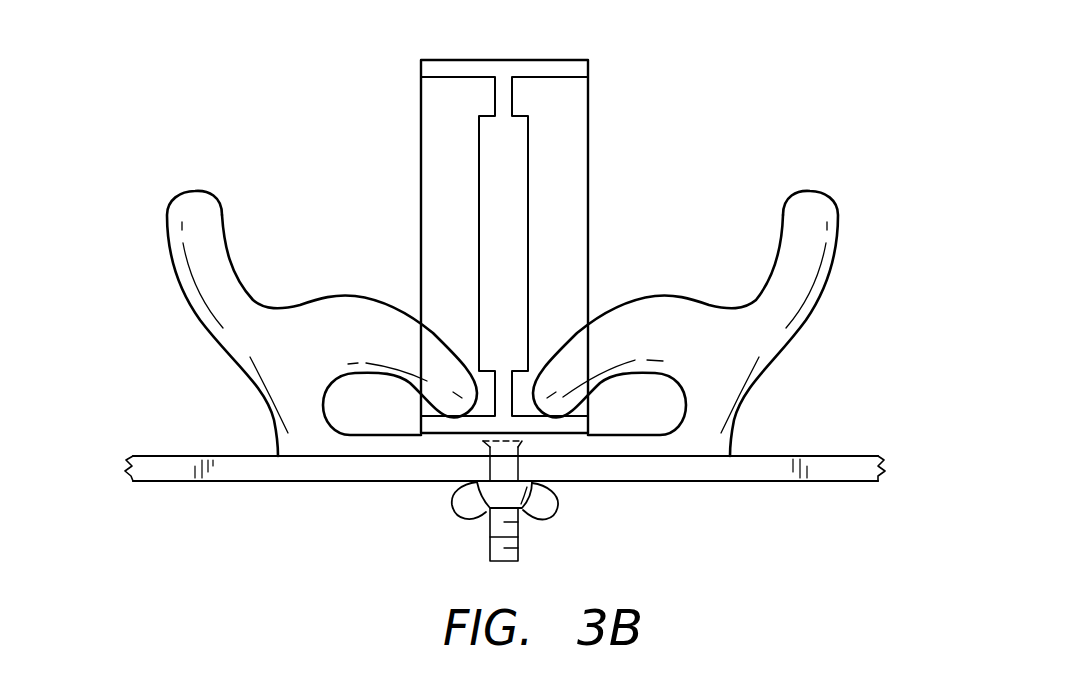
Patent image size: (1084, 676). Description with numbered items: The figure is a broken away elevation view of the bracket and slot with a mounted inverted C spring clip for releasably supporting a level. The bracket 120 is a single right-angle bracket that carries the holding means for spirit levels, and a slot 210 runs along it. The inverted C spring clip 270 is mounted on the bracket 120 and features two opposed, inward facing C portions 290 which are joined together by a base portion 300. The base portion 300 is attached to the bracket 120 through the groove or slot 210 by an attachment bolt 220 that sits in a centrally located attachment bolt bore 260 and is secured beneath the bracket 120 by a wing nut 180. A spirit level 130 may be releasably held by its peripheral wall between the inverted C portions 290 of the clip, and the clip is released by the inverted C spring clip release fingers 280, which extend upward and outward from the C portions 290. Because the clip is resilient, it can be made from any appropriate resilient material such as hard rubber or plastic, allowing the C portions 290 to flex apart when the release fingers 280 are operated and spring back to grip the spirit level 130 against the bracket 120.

The spirit level 130 is at (588, 127).
The bracket 120 is at (842, 458).
The slot 210 is at (750, 467).
The inverted C spring clip release fingers 280 is at (182, 285).
The inward facing C portions 290 is at (380, 343).
The inverted C spring clip 270 is at (619, 266).
The base portion 300 is at (392, 452).
The attachment bolt 220 is at (495, 456).
The attachment bolt bore 260 is at (518, 447).
The wing nut 180 is at (465, 510).